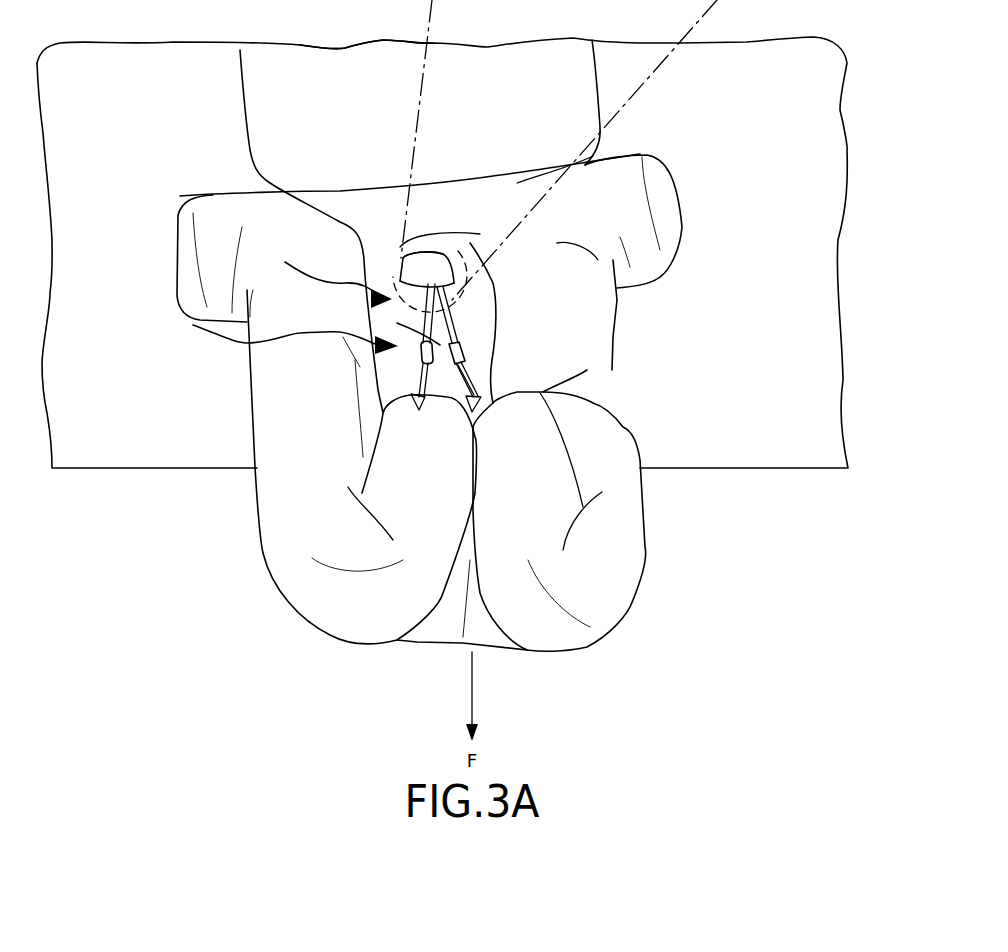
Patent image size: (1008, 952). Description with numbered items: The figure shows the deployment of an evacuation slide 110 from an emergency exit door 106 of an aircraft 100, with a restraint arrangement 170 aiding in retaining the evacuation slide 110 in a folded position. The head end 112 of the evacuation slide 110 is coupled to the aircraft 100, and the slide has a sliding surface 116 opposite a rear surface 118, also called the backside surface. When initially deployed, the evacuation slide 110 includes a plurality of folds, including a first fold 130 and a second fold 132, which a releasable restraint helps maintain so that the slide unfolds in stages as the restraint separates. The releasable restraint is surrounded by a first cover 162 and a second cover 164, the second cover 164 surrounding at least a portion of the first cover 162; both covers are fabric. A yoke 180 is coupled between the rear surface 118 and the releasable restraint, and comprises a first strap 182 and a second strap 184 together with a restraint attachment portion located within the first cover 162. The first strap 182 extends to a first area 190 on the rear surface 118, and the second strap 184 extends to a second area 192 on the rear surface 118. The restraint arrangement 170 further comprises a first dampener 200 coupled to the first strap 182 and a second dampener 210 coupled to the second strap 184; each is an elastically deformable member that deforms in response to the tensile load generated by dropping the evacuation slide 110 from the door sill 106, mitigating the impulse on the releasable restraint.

The aircraft 100 is at (752, 428).
The emergency exit door 106 is at (392, 62).
The evacuation slide 110 is at (645, 540).
The head end 112 is at (493, 200).
The sliding surface 116 is at (455, 226).
The rear surface 118 is at (440, 484).
The first fold 130 is at (590, 647).
The second fold 132 is at (587, 370).
The first cover 162 is at (437, 290).
The second cover 164 is at (417, 260).
The restraint arrangement 170 is at (275, 336).
The yoke 180 is at (319, 273).
The first strap 182 is at (397, 323).
The second strap 184 is at (473, 383).
The first area 190 is at (418, 410).
The second area 192 is at (475, 410).
The first dampener 200 is at (410, 360).
The second dampener 210 is at (467, 343).